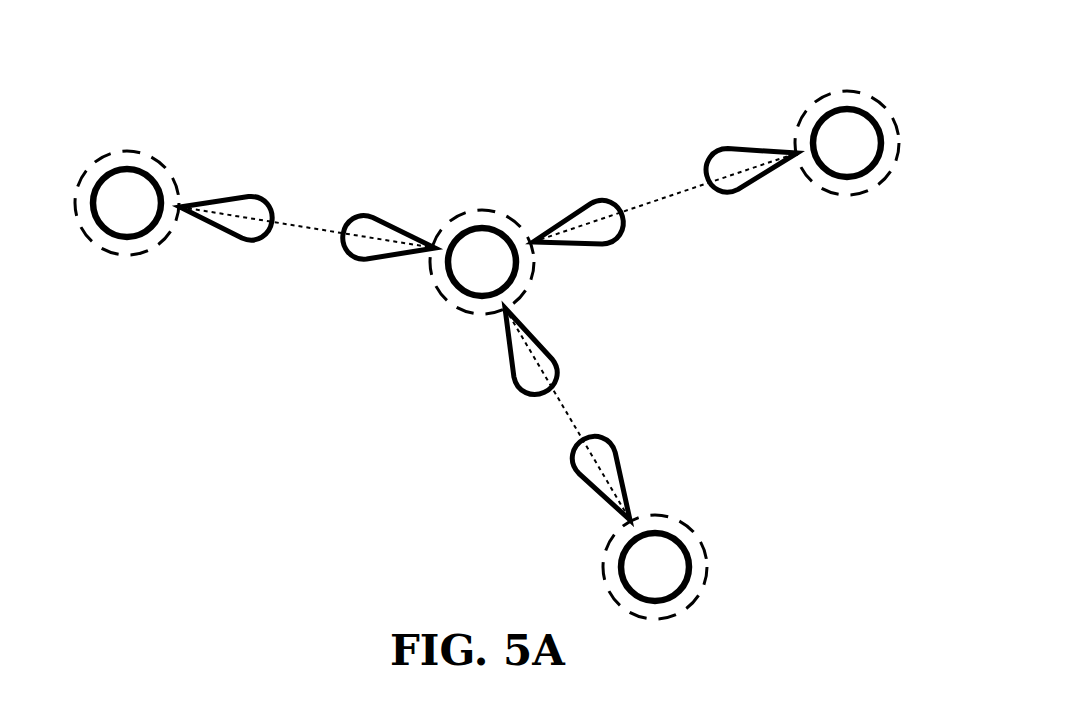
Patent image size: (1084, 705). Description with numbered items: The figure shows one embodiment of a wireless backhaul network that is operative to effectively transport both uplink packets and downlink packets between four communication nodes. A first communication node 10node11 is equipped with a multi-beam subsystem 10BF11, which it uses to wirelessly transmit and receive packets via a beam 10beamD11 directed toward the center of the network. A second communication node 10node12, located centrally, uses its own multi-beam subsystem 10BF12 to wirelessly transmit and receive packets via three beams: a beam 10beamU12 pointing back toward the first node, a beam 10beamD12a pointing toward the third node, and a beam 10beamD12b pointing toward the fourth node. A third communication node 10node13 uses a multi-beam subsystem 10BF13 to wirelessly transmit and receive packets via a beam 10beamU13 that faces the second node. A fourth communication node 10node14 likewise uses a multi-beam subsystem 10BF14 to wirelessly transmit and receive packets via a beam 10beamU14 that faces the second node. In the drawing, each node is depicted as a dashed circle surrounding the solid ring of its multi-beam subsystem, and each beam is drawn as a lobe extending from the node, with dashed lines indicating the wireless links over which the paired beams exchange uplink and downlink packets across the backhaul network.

The first communication node 10node11 is at (123, 253).
The multi-beam subsystem 10BF11 is at (125, 166).
The beam 10beamD11 is at (240, 238).
The second communication node 10node12 is at (467, 313).
The multi-beam subsystem 10BF12 is at (490, 225).
The beam 10beamU12 is at (373, 215).
The beam 10beamD12a is at (615, 243).
The beam 10beamD12b is at (567, 367).
The third communication node 10node13 is at (798, 122).
The multi-beam subsystem 10BF13 is at (838, 108).
The beam 10beamU13 is at (748, 188).
The fourth communication node 10node14 is at (705, 570).
The multi-beam subsystem 10BF14 is at (683, 541).
The beam 10beamU14 is at (580, 482).